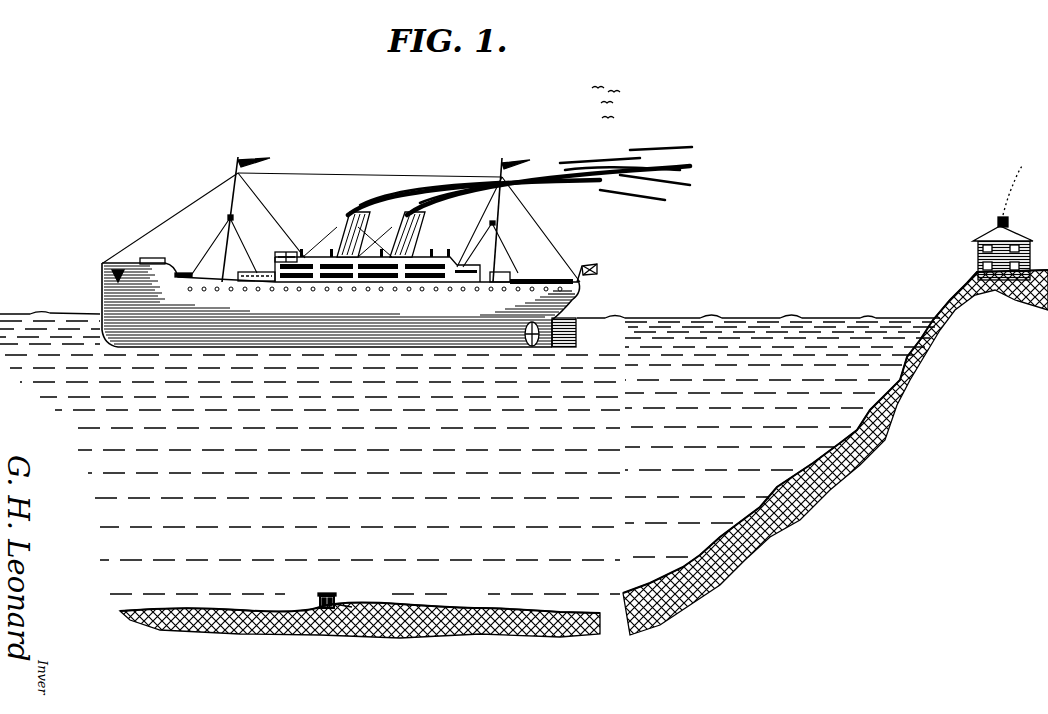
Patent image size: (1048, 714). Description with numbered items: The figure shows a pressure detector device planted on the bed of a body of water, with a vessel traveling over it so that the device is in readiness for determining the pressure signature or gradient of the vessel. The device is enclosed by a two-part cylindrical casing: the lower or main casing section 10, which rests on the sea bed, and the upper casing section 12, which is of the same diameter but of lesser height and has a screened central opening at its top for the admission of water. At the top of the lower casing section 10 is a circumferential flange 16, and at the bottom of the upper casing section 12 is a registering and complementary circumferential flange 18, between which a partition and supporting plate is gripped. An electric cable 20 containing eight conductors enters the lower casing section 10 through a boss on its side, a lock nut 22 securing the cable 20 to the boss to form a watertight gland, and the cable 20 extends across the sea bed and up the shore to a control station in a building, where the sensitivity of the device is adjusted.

The lower casing section 10 is at (319, 604).
The upper casing section 12 is at (326, 593).
The circumferential flange 16 is at (334, 599).
The circumferential flange 18 is at (321, 598).
The cable 20 is at (472, 607).
The lock nut 22 is at (336, 603).